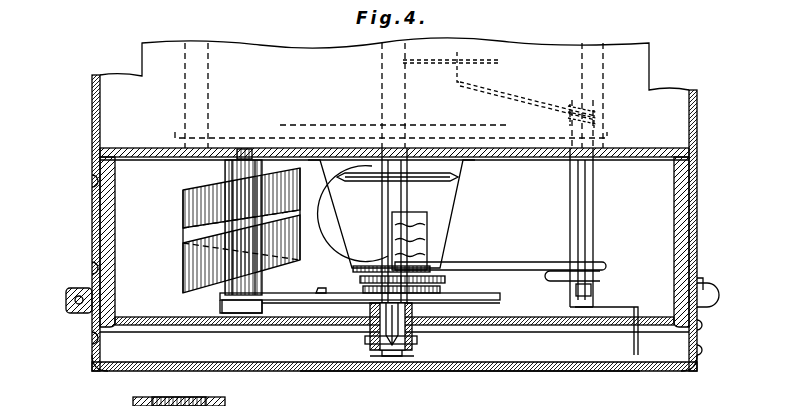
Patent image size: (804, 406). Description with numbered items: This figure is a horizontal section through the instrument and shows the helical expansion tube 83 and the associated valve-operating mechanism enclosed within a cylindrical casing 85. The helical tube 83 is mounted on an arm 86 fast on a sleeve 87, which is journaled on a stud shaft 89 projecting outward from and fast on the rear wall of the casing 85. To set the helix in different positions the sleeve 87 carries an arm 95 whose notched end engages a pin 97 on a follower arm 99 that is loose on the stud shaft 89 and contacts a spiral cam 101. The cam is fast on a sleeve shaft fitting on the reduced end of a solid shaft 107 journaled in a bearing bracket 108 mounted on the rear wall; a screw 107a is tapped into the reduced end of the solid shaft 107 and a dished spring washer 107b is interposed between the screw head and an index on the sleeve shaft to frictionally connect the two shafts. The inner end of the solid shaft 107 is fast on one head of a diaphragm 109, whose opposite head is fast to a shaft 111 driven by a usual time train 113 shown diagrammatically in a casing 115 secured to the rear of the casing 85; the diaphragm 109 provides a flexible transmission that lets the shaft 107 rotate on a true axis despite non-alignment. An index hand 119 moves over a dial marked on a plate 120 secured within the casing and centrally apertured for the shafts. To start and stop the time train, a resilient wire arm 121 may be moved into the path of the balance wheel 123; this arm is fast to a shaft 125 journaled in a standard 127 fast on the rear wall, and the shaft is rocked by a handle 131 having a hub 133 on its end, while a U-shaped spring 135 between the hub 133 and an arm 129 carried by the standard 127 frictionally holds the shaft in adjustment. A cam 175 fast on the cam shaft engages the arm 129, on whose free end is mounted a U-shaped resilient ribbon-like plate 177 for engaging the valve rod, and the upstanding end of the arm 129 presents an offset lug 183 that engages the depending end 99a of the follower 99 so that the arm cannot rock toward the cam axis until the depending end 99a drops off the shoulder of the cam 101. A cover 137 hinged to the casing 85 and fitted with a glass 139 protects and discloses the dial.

The helical expansion tube 83 is at (190, 272).
The cylindrical casing 85 is at (100, 225).
The arm 86 is at (226, 178).
The sleeve 87 is at (243, 233).
The stud shaft 89 is at (244, 148).
The arm 95 is at (300, 276).
The pin 97 is at (321, 288).
The follower arm 99 is at (296, 302).
The depending end of follower 99a is at (418, 293).
The spiral cam 101 is at (446, 289).
The solid shaft 107 is at (380, 194).
The screw 107a is at (390, 356).
The dished spring washer 107b is at (410, 358).
The bearing bracket 108 is at (452, 210).
The diaphragm 109 is at (462, 184).
The shaft 111 is at (388, 148).
The time train 113 is at (345, 124).
The casing 115 is at (96, 105).
The index hand 119 is at (417, 340).
The dial plate 120 is at (183, 324).
The arm 121 is at (510, 98).
The balance wheel 123 is at (498, 66).
The shaft 125 is at (575, 124).
The standard 127 is at (595, 206).
The arm 129 is at (545, 258).
The handle 131 is at (634, 350).
The hub 133 is at (594, 290).
The U-shaped spring 135 is at (563, 283).
The cover 137 is at (700, 368).
The glass 139 is at (474, 372).
The cam 175 is at (433, 270).
The U-shaped resilient plate 177 is at (430, 236).
The offset lug 183 is at (370, 345).